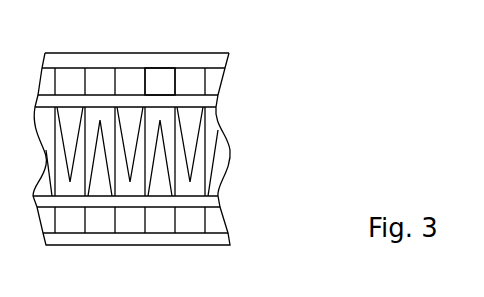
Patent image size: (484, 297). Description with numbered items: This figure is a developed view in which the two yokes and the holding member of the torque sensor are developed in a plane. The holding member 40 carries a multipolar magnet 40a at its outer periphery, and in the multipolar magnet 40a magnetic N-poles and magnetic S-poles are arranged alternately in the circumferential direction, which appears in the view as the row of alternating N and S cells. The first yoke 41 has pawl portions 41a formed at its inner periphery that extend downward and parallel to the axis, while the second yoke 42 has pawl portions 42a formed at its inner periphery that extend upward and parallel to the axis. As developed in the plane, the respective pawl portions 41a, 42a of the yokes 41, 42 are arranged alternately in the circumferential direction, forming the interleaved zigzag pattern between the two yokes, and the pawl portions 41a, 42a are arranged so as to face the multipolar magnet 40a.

The holding member 40 is at (197, 53).
The multipolar magnet 40a is at (162, 82).
The first yoke 41 is at (197, 95).
The pawl portions 41a is at (192, 140).
The second yoke 42 is at (208, 215).
The pawl portions 42a is at (222, 160).